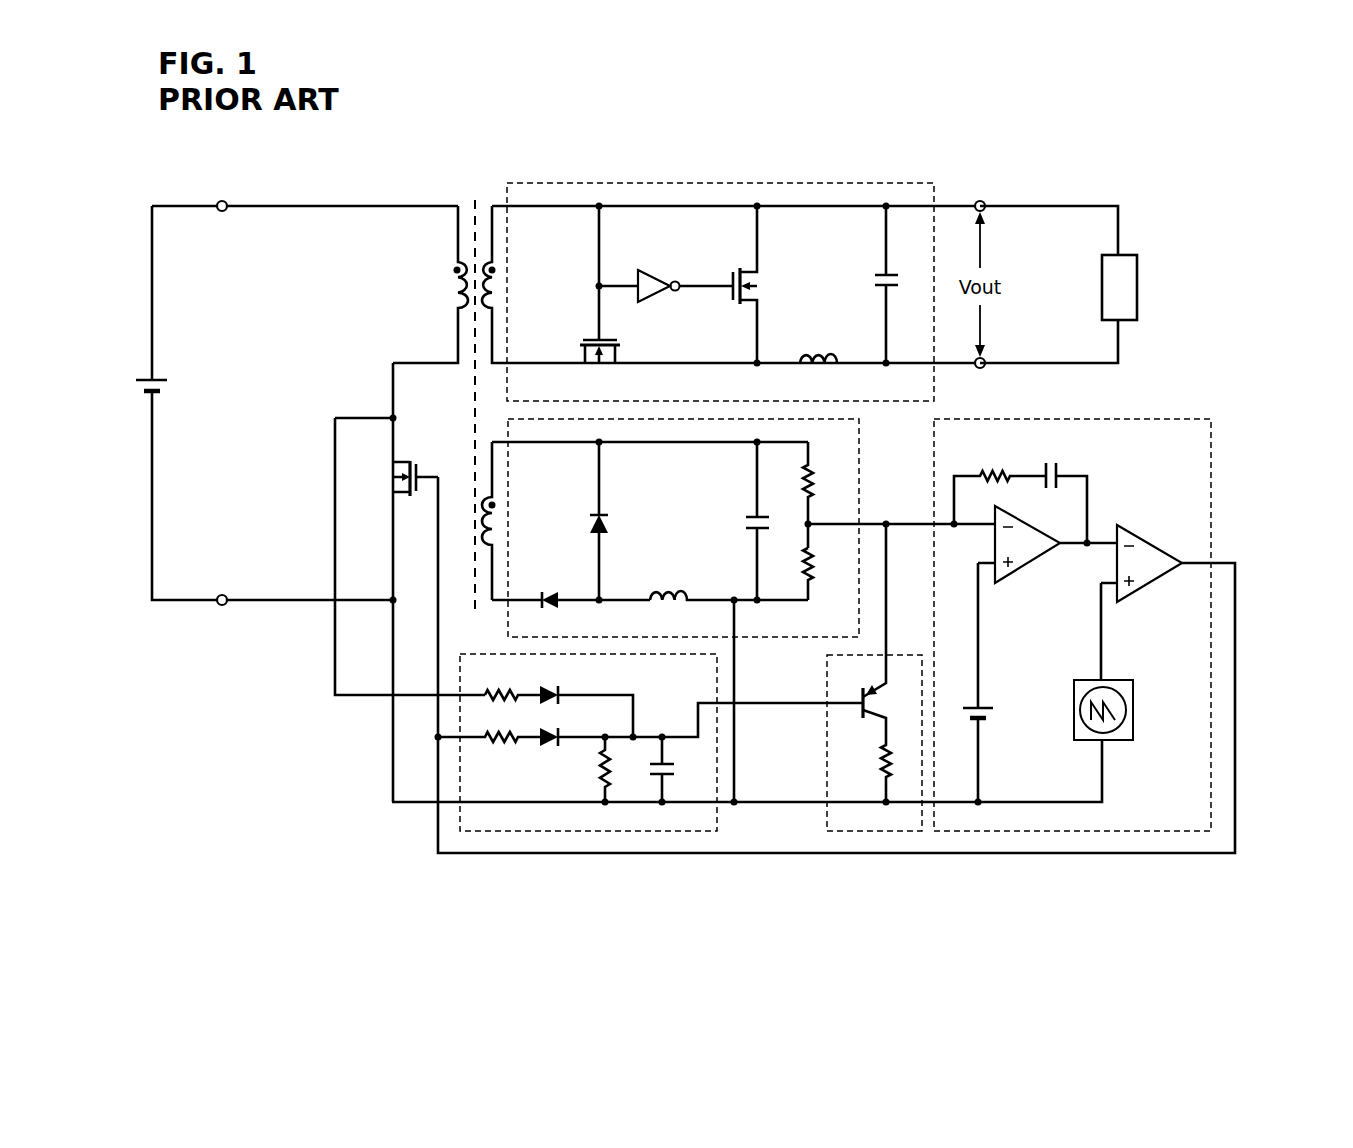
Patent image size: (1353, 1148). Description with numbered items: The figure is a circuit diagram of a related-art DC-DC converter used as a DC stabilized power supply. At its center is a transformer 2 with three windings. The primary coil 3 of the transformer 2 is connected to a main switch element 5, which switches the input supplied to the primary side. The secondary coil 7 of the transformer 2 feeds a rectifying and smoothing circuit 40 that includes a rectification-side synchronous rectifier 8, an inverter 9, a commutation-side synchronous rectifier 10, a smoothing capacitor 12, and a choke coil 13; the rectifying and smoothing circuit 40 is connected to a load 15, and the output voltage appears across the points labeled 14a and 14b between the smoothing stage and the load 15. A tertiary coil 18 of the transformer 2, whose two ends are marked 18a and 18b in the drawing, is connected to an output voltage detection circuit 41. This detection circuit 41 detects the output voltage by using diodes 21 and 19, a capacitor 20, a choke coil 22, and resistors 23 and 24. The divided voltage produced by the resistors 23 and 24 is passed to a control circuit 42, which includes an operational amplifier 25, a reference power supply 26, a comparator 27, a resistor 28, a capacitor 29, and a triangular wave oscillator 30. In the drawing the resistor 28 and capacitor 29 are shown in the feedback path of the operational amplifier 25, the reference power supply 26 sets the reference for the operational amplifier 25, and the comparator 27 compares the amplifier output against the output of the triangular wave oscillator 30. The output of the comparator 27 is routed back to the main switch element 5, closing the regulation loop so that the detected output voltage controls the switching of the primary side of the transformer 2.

The transformer 2 is at (473, 198).
The primary coil 3 is at (455, 285).
The main switch element 5 is at (412, 460).
The secondary coil 7 is at (487, 287).
The rectification-side synchronous rectifier 8 is at (622, 343).
The inverter 9 is at (654, 270).
The commutation-side synchronous rectifier 10 is at (734, 302).
The smoothing capacitor 12 is at (873, 275).
The choke coil 13 is at (817, 355).
The output terminal 14a is at (983, 200).
The output terminal 14b is at (988, 362).
The load 15 is at (1137, 256).
The tertiary coil 18 is at (488, 520).
The winding end 18a is at (492, 476).
The winding end 18b is at (492, 560).
The diode 19 is at (608, 515).
The capacitor 20 is at (746, 520).
The diode 21 is at (560, 603).
The choke coil 22 is at (668, 590).
The resistor 23 is at (815, 476).
The resistor 24 is at (815, 558).
The operational amplifier 25 is at (1025, 566).
The reference power supply 26 is at (993, 706).
The comparator 27 is at (1150, 542).
The resistor 28 is at (992, 466).
The capacitor 29 is at (1053, 463).
The triangular wave oscillator 30 is at (1135, 680).
The rectifying and smoothing circuit 40 is at (800, 180).
The output voltage detection circuit 41 is at (862, 447).
The control circuit 42 is at (1212, 475).